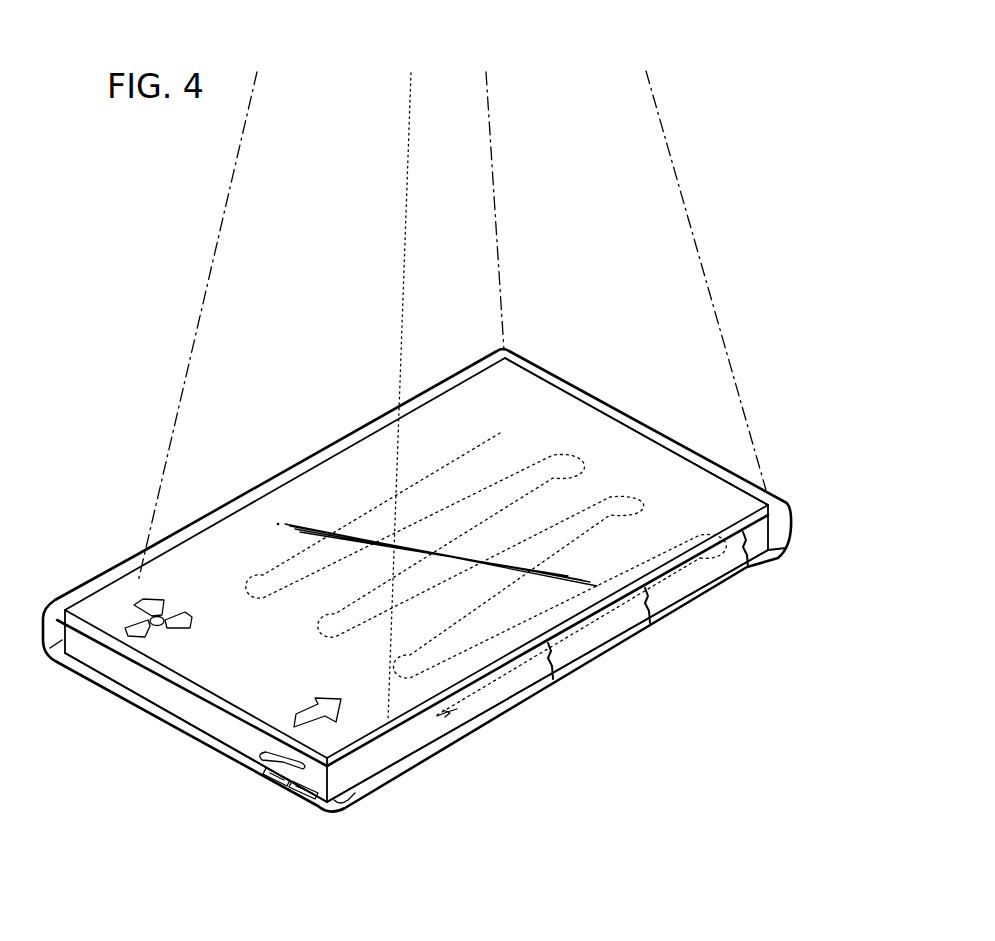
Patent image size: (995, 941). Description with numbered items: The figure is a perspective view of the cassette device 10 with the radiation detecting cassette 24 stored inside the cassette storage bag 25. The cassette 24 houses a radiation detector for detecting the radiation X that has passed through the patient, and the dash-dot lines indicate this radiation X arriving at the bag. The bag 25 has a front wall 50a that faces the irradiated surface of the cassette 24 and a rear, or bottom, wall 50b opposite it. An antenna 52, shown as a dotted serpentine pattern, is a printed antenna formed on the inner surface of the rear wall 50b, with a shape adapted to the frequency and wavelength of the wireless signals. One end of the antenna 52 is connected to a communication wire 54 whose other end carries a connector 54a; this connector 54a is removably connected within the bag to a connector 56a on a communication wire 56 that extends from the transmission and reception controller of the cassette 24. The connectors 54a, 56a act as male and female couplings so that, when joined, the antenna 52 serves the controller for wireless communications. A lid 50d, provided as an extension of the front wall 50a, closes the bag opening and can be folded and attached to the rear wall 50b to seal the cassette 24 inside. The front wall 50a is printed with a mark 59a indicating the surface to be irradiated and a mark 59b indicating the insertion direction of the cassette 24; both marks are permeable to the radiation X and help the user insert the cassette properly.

The cassette device 10 is at (151, 251).
The radiation X is at (197, 305).
The radiation detecting cassette 24 is at (324, 481).
The cassette storage bag 25 is at (349, 436).
The front wall 50a is at (567, 388).
The rear wall 50b is at (512, 699).
The lid 50d is at (138, 689).
The antenna 52 is at (633, 485).
The communication wire 54 is at (333, 804).
The connector 54a is at (304, 794).
The communication wire 56 is at (283, 783).
The connector 56a is at (250, 757).
The mark 59a is at (153, 606).
The mark 59b is at (333, 687).